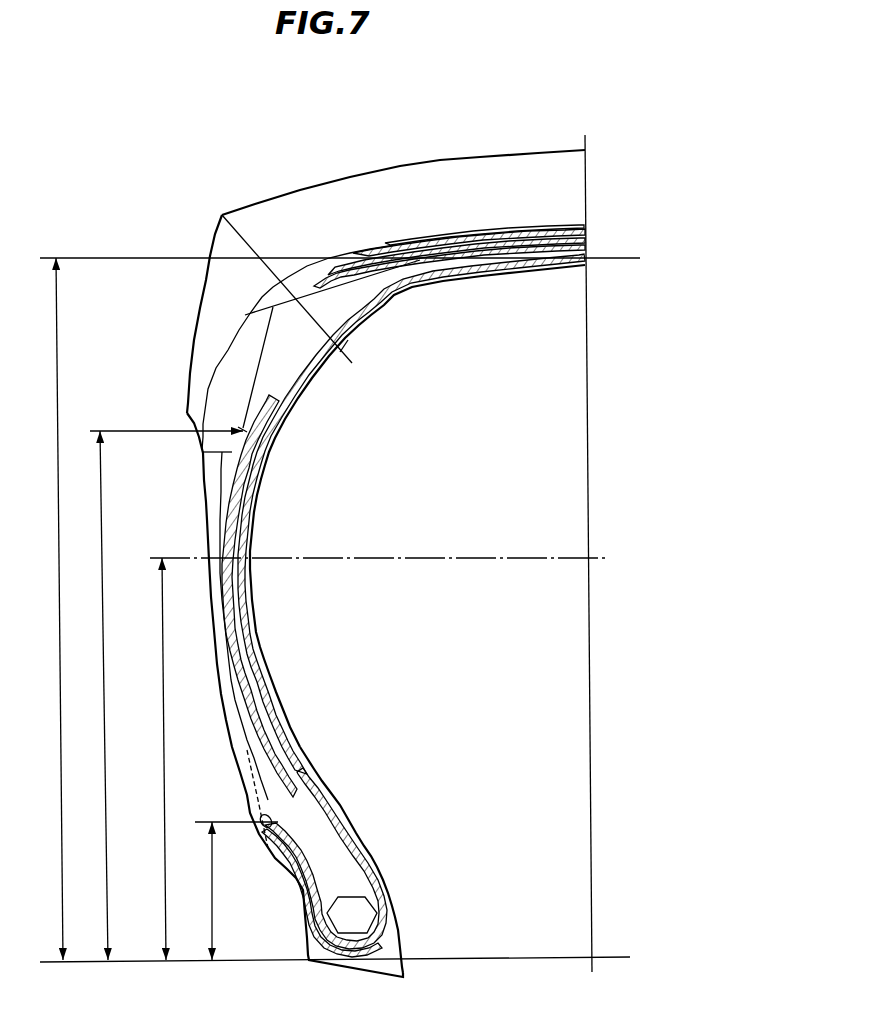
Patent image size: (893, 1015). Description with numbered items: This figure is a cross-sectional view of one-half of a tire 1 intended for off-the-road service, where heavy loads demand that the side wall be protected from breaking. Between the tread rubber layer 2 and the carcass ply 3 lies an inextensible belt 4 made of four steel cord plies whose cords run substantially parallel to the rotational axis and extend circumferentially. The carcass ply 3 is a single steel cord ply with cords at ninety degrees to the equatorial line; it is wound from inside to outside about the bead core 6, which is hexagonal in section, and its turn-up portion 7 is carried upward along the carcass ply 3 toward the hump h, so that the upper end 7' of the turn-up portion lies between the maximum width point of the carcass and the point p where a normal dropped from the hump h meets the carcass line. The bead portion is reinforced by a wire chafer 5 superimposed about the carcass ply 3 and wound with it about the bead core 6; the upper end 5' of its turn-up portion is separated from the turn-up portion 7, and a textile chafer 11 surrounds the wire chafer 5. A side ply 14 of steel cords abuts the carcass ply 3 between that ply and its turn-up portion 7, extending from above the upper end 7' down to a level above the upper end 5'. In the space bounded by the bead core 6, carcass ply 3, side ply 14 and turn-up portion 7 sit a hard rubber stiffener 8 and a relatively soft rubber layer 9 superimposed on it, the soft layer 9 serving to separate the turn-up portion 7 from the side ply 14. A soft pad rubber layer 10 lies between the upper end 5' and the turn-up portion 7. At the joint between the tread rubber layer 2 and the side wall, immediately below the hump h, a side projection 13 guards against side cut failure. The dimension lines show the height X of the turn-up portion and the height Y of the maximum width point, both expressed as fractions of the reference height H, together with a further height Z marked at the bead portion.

The pneumatic tire 1 is at (283, 188).
The tread rubber layer 2 is at (372, 165).
The carcass ply 3 is at (286, 392).
The inextensible belt 4 is at (470, 228).
The wire chafer 5 is at (355, 860).
The upper end of turn-up portion of wire chafer 5' is at (257, 853).
The bead core 6 is at (365, 920).
The turn-up portion of carcass ply 7 is at (190, 466).
The upper end of turn-up portion 7' is at (189, 407).
The hard rubber stiffener 8 is at (307, 790).
The soft rubber layer 9 is at (283, 787).
The soft pad rubber layer 10 is at (247, 728).
The textile chafer 11 is at (252, 782).
The side projection 13 is at (195, 322).
The side ply 14 is at (240, 602).
The hump h is at (222, 215).
The point p is at (333, 342).
The reference height H is at (340, 609).
The height of turn-up portion X is at (166, 695).
The height of maximum width point Y is at (376, 759).
The turn-up height Z is at (236, 891).